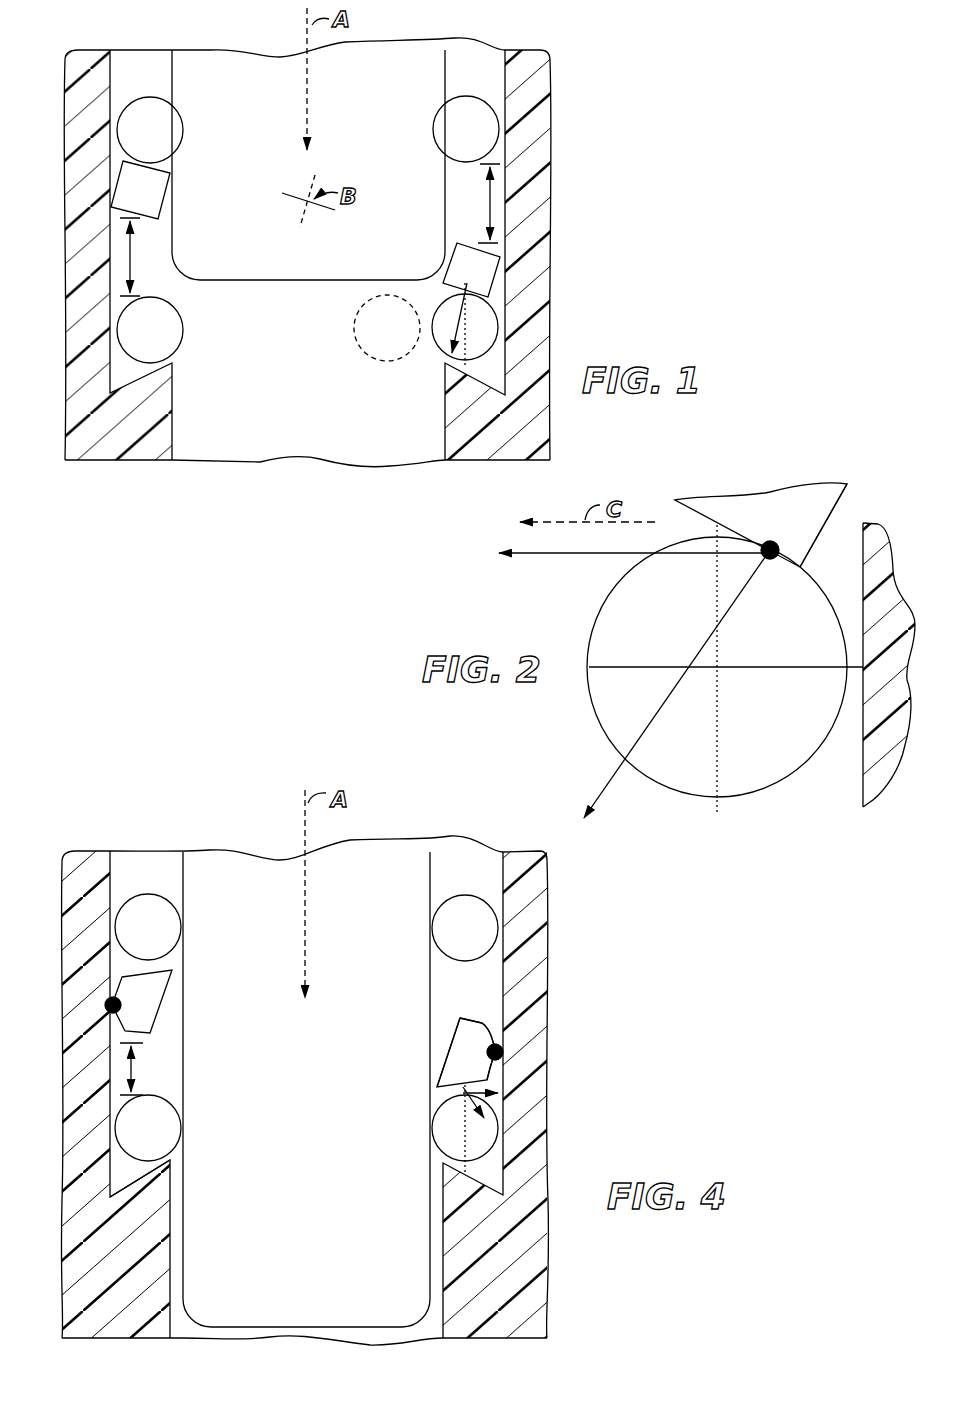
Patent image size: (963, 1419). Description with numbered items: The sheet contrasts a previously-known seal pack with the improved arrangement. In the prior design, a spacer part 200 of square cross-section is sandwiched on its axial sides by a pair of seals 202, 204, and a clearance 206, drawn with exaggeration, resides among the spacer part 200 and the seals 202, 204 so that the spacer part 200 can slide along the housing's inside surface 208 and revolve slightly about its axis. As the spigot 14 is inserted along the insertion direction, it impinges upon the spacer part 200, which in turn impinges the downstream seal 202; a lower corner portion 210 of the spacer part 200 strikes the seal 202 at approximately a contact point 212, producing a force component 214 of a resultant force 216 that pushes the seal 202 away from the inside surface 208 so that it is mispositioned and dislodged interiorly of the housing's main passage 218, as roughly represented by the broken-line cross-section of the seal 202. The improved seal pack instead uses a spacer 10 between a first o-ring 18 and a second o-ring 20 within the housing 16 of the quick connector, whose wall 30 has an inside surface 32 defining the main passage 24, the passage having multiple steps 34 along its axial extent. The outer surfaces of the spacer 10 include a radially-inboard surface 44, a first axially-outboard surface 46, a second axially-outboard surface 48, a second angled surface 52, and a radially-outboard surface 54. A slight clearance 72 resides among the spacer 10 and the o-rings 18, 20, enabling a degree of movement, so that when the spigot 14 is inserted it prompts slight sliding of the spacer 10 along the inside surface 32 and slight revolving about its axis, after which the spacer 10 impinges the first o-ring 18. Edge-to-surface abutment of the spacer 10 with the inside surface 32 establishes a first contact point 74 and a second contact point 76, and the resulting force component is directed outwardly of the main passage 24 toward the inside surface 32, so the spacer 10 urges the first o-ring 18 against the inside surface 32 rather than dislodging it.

In FIG. 4, the spacer 10 is at (162, 1011).
In FIG. 1, the spigot 14 is at (288, 285).
In FIG. 4, the spigot 14 is at (258, 1333).
In FIG. 4, the housing 16 is at (68, 876).
In FIG. 4, the first o-ring 18 is at (126, 1158).
In FIG. 4, the second o-ring 20 is at (120, 953).
In FIG. 4, the main passage 24 is at (113, 855).
In FIG. 4, the wall 30 is at (525, 898).
In FIG. 4, the inside surface 32 is at (505, 862).
In FIG. 4, the steps 34 is at (163, 1172).
In FIG. 4, the radially-inboard surface 44 is at (445, 1062).
In FIG. 4, the first axially-outboard surface 46 is at (462, 1088).
In FIG. 4, the second axially-outboard surface 48 is at (478, 1018).
In FIG. 4, the second angled surface 52 is at (500, 1022).
In FIG. 4, the radially-outboard surface 54 is at (495, 1070).
In FIG. 4, the clearance 72 is at (128, 1067).
In FIG. 4, the first contact point 74 is at (110, 1007).
In FIG. 4, the second contact point 76 is at (503, 1052).
In FIG. 1, the spacer part 200 is at (117, 183).
In FIG. 2, the spacer part 200 is at (812, 498).
In FIG. 1, the seal 202 is at (127, 354).
In FIG. 2, the seal 202 is at (765, 800).
In FIG. 1, the seal 204 is at (117, 133).
In FIG. 1, the clearance 206 is at (130, 258).
In FIG. 1, the inside surface 208 is at (505, 60).
In FIG. 2, the inside surface 208 is at (863, 763).
In FIG. 2, the lower corner portion 210 is at (800, 535).
In FIG. 2, the contact point 212 is at (768, 542).
In FIG. 2, the force component 214 is at (580, 556).
In FIG. 2, the resultant force 216 is at (655, 717).
In FIG. 1, the main passage 218 is at (113, 62).